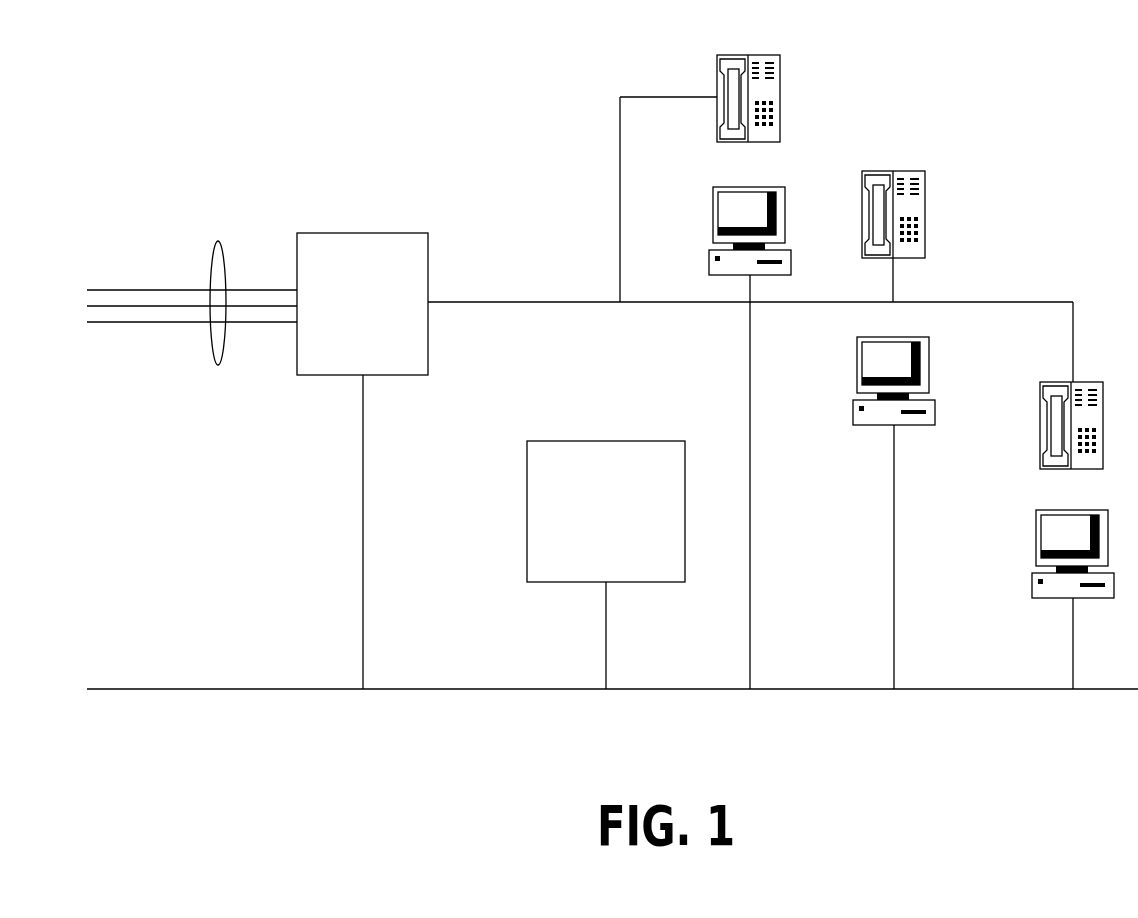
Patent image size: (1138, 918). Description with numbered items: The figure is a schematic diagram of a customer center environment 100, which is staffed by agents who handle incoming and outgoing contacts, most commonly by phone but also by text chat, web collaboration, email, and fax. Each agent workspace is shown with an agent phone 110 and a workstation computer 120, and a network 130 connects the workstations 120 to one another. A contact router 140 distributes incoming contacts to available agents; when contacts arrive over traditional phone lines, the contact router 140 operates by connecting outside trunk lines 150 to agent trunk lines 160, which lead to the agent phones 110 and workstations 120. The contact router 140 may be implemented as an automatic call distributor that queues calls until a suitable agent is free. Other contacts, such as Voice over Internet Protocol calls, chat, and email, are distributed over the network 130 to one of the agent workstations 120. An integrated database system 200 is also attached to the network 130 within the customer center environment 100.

The customer center environment 100 is at (993, 97).
The agent phone 110 is at (927, 262).
The workstation computer 120 is at (885, 438).
The network 130 is at (612, 712).
The contact router 140 is at (362, 461).
The outside trunk lines 150 is at (218, 241).
The agent trunk lines 160 is at (750, 239).
The integrated database system 200 is at (606, 565).